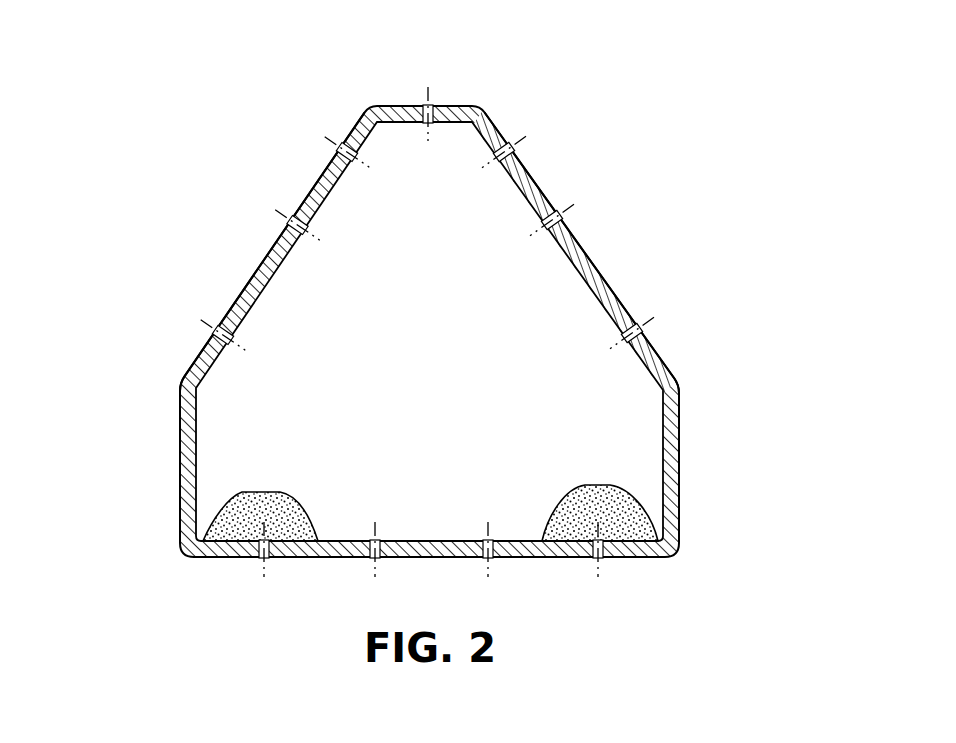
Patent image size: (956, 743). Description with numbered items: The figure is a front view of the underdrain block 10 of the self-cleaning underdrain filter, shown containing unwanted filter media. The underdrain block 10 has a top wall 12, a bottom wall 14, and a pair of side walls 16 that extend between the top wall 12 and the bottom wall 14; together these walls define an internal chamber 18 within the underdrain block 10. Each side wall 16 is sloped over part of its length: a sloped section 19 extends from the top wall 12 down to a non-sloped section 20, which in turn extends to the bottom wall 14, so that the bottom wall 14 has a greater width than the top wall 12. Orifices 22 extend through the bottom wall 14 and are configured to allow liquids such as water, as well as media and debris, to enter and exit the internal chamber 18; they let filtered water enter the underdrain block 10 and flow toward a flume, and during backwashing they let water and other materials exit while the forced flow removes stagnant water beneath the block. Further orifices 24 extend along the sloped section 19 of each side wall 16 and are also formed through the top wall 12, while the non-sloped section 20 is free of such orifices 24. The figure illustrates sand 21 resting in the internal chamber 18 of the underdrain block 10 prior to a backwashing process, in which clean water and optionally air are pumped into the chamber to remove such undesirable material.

The underdrain block 10 is at (688, 114).
The top wall 12 is at (466, 106).
The bottom wall 14 is at (617, 559).
The side walls 16 is at (179, 385).
The internal chamber 18 is at (412, 376).
The sloped section 19 is at (253, 272).
The non-sloped section 20 is at (180, 460).
The sand 21 is at (281, 491).
The orifices 22 is at (262, 558).
The orifices 24 is at (422, 110).